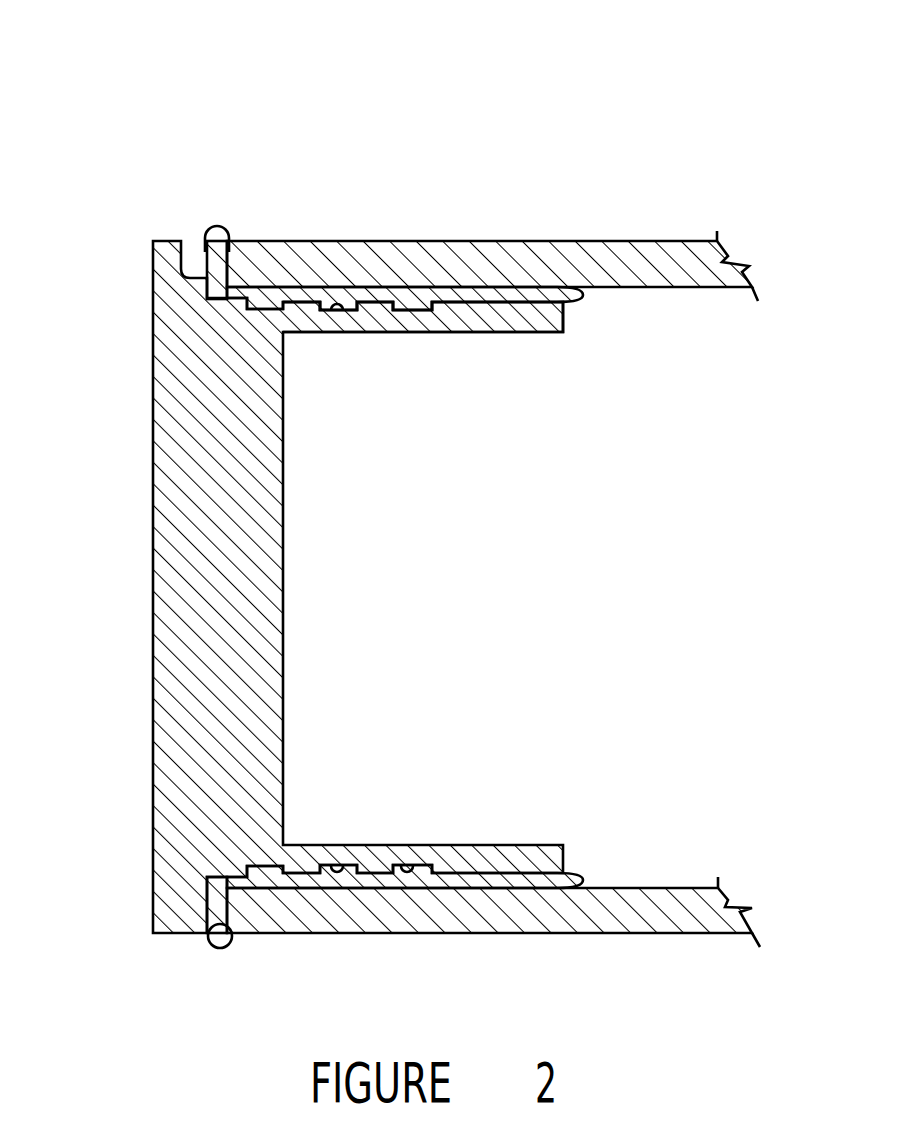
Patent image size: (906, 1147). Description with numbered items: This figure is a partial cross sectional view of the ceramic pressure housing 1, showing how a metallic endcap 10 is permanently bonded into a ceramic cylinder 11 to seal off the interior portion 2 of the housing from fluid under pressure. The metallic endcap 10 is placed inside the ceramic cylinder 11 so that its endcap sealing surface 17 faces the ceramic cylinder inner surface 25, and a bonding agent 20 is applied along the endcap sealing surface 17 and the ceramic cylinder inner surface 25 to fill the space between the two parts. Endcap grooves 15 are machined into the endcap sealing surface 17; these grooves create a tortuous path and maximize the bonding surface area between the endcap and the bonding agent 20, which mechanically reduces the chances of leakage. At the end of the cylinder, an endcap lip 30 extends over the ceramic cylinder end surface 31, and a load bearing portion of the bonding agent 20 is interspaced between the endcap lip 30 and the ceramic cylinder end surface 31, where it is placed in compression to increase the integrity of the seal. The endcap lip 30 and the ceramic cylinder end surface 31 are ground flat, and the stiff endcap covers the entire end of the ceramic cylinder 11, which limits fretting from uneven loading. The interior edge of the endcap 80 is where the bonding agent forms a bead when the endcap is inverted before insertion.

The ceramic pressure housing 1 is at (382, 132).
The interior portion 2 is at (462, 598).
The metallic endcap 10 is at (140, 590).
The ceramic cylinder 11 is at (485, 212).
The endcap grooves 15 is at (340, 305).
The endcap sealing surface 17 is at (413, 880).
The bonding agent 20 is at (580, 863).
The ceramic cylinder inner surface 25 is at (675, 291).
The endcap lip 30 is at (207, 277).
The ceramic cylinder end surface 31 is at (228, 256).
The interior edge of the endcap 80 is at (565, 318).